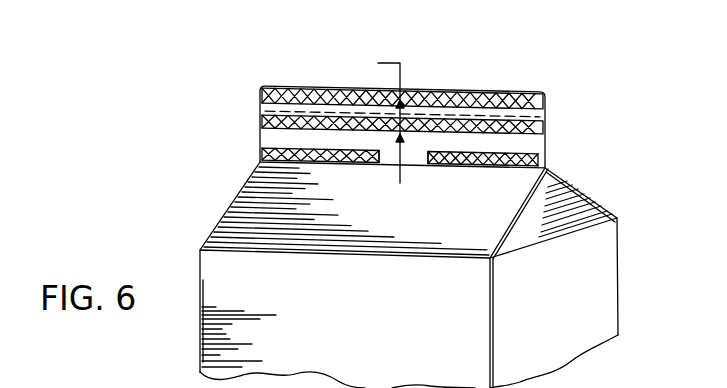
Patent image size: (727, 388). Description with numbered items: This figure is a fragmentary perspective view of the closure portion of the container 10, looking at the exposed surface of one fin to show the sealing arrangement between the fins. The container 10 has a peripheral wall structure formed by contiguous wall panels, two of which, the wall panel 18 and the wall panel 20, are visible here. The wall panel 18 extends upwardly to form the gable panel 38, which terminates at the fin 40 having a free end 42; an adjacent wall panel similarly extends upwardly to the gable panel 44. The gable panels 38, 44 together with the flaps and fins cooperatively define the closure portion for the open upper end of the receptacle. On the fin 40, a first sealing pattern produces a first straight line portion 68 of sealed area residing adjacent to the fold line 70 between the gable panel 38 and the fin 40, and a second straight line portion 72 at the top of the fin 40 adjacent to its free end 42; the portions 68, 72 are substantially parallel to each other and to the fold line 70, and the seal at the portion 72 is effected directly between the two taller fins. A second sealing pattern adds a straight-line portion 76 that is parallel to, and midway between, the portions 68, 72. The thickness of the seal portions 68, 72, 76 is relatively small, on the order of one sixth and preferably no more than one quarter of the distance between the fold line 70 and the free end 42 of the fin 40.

The container 10 is at (429, 206).
The wall panel 18 is at (420, 358).
The wall panel 20 is at (566, 323).
The gable panel 38 is at (343, 217).
The fin 40 is at (260, 135).
The free end 42 is at (312, 87).
The gable panel 44 is at (570, 178).
The first straight line portion 68 is at (455, 167).
The fold line 70 is at (383, 164).
The second straight line portion 72 is at (382, 129).
The portion 76 is at (492, 117).